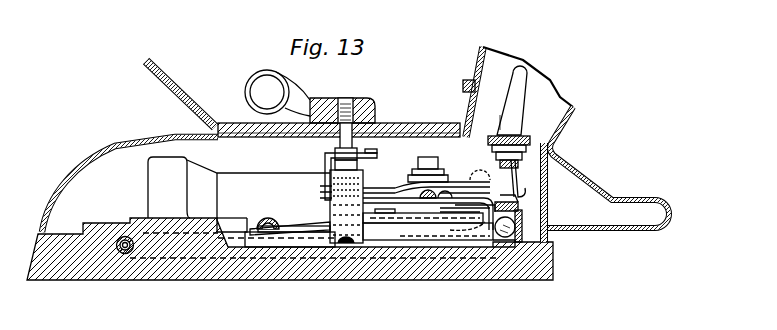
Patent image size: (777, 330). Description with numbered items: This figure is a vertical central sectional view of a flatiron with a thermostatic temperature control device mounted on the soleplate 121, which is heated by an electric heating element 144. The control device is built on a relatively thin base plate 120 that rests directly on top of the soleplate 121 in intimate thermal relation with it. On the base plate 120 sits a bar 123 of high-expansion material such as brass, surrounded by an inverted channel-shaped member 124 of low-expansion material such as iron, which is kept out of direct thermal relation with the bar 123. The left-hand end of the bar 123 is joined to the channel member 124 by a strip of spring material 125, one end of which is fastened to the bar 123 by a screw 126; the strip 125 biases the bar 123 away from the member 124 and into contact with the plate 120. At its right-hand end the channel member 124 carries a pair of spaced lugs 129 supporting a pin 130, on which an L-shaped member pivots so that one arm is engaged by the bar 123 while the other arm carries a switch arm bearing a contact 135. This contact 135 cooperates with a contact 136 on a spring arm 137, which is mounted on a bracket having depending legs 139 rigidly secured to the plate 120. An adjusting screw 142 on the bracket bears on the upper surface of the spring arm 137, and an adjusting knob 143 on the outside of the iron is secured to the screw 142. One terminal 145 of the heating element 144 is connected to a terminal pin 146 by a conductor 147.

The base plate 120 is at (265, 248).
The soleplate 121 is at (423, 277).
The bar 123 is at (300, 240).
The inverted channel-shaped member 124 is at (388, 230).
The strip of spring material 125 is at (297, 228).
The screw 126 is at (258, 222).
The lugs 129 is at (510, 232).
The pin 130 is at (502, 235).
The contact 135 is at (326, 193).
The contact 136 is at (328, 170).
The spring arm 137 is at (378, 186).
The depending legs 139 is at (343, 212).
The adjusting screw 142 is at (375, 135).
The adjusting knob 143 is at (257, 92).
The electric heating element 144 is at (118, 238).
The terminal 145 is at (522, 210).
The terminal pin 146 is at (515, 122).
The conductor 147 is at (523, 180).